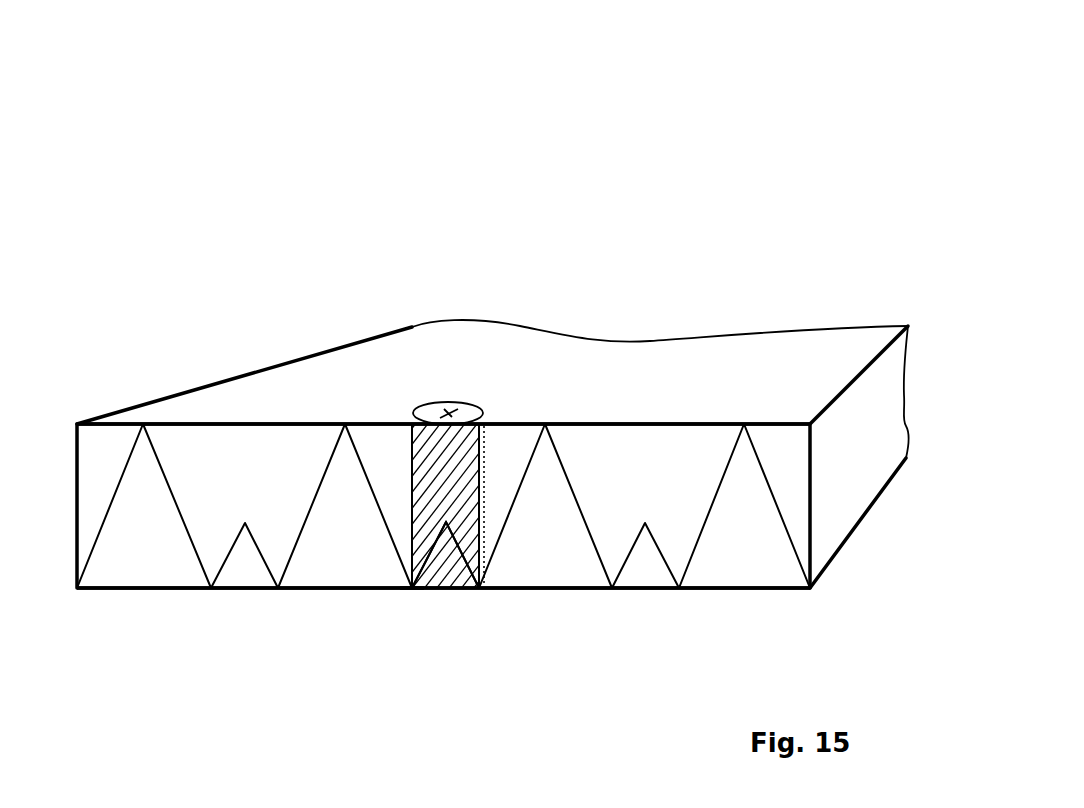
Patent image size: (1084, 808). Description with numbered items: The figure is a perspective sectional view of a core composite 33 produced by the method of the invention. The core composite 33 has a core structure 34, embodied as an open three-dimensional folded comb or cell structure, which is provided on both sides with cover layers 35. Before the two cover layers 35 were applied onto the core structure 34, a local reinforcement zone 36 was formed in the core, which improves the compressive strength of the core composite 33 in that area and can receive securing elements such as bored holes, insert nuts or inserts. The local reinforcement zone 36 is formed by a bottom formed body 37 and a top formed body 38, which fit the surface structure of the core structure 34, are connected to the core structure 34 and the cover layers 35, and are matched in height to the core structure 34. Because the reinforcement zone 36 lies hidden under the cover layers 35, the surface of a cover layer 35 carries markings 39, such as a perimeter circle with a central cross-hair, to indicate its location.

The core composite 33 is at (592, 108).
The core structure 34 is at (779, 512).
The cover layers 35 is at (787, 352).
The local reinforcement zone 36 is at (411, 623).
The bottom formed body 37 is at (448, 590).
The top formed body 38 is at (427, 457).
The markings 39 is at (460, 385).